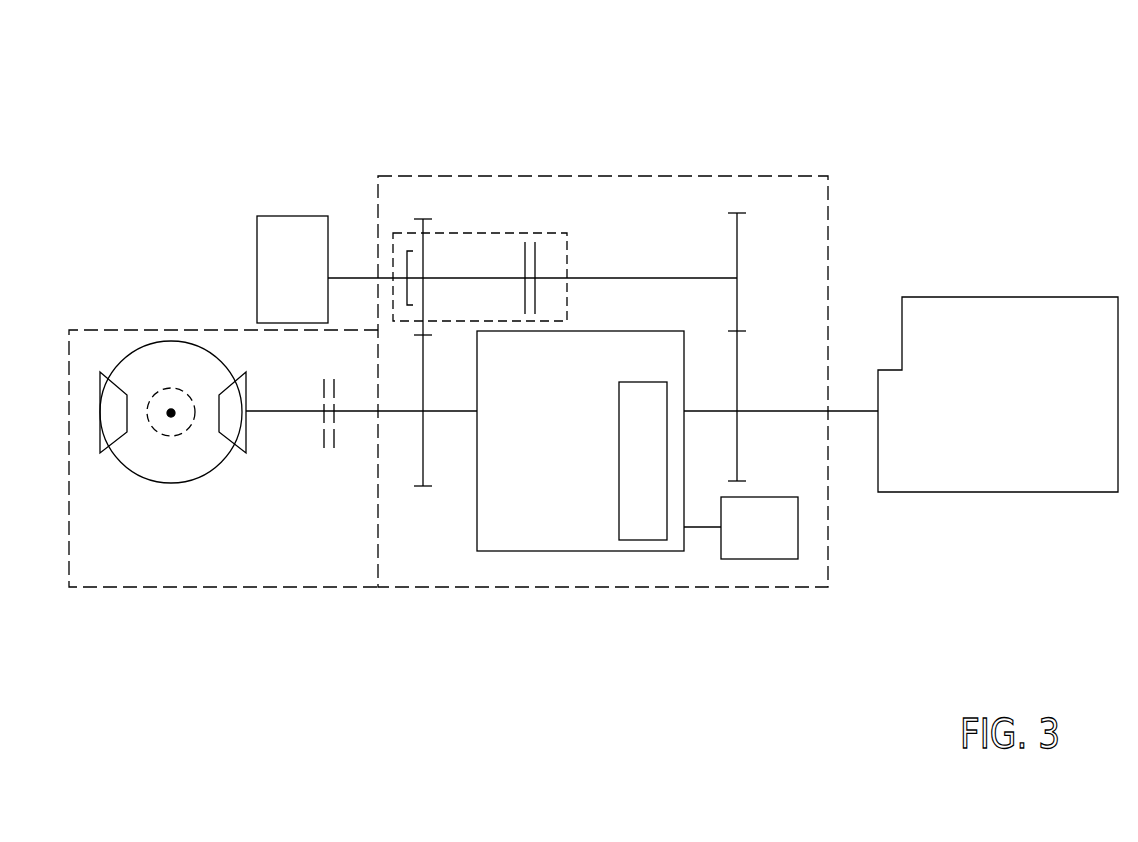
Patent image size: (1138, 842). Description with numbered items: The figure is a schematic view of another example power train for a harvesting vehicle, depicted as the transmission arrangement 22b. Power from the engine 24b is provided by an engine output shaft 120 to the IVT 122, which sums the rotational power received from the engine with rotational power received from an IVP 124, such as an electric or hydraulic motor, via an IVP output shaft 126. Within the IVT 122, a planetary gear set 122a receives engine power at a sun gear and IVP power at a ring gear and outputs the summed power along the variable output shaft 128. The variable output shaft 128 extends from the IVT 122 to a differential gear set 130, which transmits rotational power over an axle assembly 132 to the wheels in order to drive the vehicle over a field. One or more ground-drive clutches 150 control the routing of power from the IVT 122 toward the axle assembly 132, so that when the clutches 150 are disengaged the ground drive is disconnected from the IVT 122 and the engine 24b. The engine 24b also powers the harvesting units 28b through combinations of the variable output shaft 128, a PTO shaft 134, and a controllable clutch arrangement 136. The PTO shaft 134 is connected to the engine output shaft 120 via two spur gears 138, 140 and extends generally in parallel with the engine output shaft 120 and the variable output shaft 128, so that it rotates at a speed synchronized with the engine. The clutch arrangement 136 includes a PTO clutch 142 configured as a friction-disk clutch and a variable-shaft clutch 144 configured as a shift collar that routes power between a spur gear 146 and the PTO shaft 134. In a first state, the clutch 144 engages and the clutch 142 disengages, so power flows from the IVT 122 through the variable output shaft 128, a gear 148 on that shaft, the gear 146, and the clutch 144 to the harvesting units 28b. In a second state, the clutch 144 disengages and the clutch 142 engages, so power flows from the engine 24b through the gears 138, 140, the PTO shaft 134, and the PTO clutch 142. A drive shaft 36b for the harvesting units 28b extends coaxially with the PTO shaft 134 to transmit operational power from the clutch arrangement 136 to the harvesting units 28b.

The transmission arrangement 22b is at (792, 175).
The engine 24b is at (982, 297).
The harvesting units 28b is at (292, 216).
The drive shaft 36b is at (347, 277).
The engine output shaft 120 is at (855, 411).
The IVT 122 is at (588, 551).
The planetary gear set 122a is at (643, 540).
The IVP 124 is at (760, 559).
The IVP output shaft 126 is at (698, 527).
The variable output shaft 128 is at (455, 411).
The differential gear set 130 is at (212, 472).
The axle assembly 132 is at (171, 413).
The PTO shaft 134 is at (667, 277).
The clutch arrangement 136 is at (480, 233).
The spur gear 138 is at (739, 365).
The spur gear 140 is at (739, 241).
The PTO clutch 142 is at (535, 265).
The variable-shaft clutch 144 is at (407, 265).
The spur gear 146 is at (423, 247).
The gear 148 is at (423, 462).
The ground-drive clutches 150 is at (323, 398).